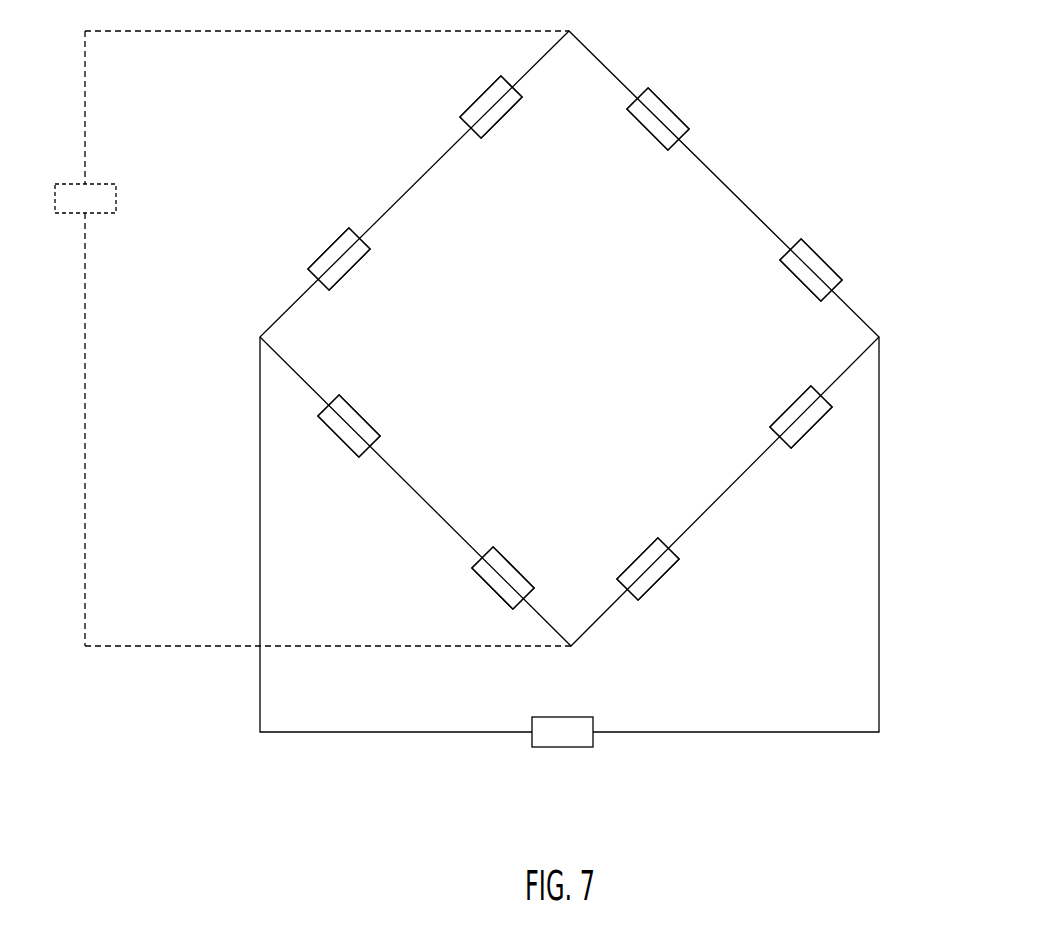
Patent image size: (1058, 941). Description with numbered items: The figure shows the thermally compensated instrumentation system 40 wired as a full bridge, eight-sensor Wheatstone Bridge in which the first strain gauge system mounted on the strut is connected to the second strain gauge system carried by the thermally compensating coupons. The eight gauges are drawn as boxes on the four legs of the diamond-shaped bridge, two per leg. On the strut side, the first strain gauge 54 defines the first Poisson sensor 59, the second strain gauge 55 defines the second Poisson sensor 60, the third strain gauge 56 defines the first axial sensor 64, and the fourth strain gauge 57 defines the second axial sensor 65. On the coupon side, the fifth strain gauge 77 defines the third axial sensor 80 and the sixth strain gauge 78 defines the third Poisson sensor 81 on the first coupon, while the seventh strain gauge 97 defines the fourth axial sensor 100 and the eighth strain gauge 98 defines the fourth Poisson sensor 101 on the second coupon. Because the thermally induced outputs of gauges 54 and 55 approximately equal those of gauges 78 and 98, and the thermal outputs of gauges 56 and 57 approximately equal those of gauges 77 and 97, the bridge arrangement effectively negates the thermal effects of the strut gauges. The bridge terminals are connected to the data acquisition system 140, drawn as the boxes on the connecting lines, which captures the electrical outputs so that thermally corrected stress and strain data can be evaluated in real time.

The thermally compensated instrumentation system 40 is at (784, 517).
The data acquisition system 140 is at (117, 198).
The first strain gauge 54 is at (657, 105).
The second strain gauge 55 is at (330, 425).
The third strain gauge 56 is at (335, 245).
The fourth strain gauge 57 is at (650, 570).
The fifth strain gauge 77 is at (817, 265).
The sixth strain gauge 78 is at (470, 107).
The seventh strain gauge 97 is at (485, 578).
The eighth strain gauge 98 is at (808, 420).
The first Poisson sensor 59 is at (658, 132).
The second Poisson sensor 60 is at (365, 418).
The first axial sensor 64 is at (333, 270).
The second axial sensor 65 is at (650, 542).
The third axial sensor 80 is at (792, 262).
The third Poisson sensor 81 is at (486, 137).
The fourth axial sensor 100 is at (510, 580).
The fourth Poisson sensor 101 is at (778, 422).